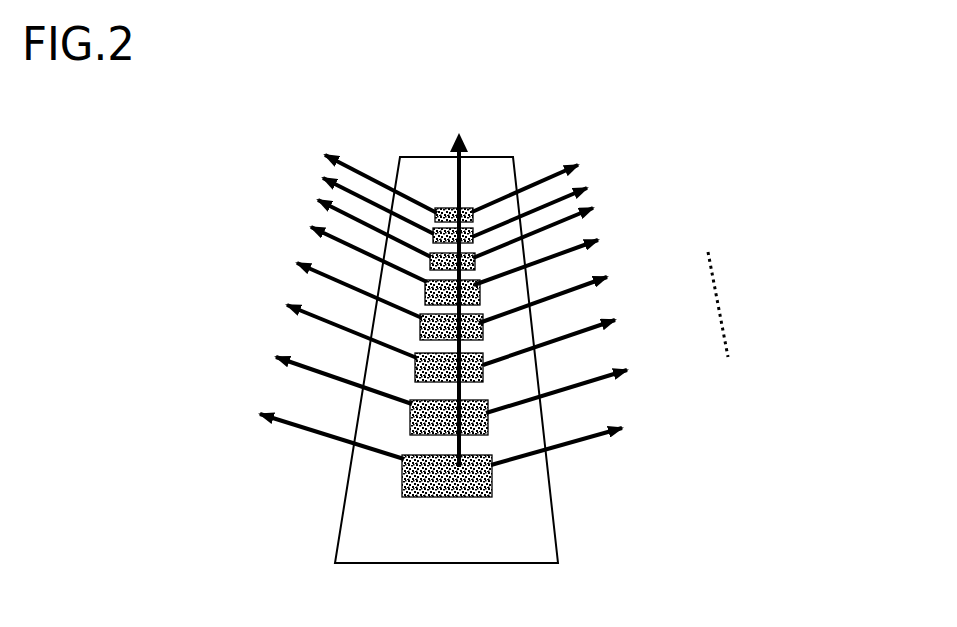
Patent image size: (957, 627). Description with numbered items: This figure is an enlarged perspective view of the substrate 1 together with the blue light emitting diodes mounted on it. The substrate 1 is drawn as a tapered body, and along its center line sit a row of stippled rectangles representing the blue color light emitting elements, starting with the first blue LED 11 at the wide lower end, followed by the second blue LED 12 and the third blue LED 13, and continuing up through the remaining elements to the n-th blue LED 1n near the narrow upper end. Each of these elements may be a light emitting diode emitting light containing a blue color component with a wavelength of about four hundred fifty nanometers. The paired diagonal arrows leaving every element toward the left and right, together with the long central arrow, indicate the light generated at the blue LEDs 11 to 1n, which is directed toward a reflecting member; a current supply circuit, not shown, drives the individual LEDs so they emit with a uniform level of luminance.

The substrate 1 is at (348, 540).
The blue color light emitting element 11 is at (492, 486).
The blue color light emitting element 12 is at (488, 427).
The blue color light emitting element 13 is at (483, 381).
The blue color light emitting element 1n is at (473, 217).